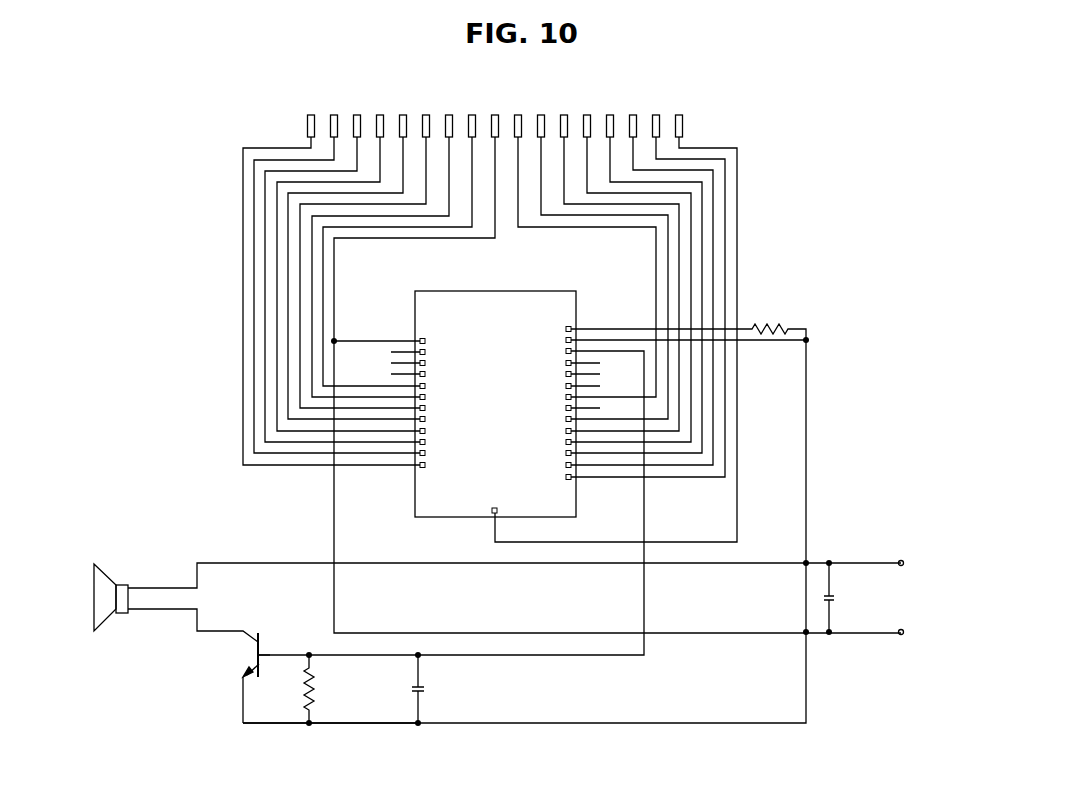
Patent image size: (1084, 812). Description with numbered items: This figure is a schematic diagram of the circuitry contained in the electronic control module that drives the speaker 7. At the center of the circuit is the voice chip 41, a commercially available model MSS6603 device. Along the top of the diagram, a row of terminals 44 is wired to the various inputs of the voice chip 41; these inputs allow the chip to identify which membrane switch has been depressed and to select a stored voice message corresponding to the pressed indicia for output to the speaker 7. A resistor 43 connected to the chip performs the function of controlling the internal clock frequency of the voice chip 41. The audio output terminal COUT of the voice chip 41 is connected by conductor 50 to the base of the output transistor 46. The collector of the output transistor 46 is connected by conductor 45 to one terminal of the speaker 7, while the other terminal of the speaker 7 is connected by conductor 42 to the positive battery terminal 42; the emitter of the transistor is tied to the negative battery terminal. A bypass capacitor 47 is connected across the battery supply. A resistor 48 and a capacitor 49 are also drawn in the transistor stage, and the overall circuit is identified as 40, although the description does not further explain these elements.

The speaker 7 is at (102, 618).
The sound generating circuit 40 is at (348, 728).
The voice chip 41 is at (522, 291).
The terminal 42 is at (866, 563).
The resistor 43 is at (764, 322).
The terminals 44 is at (692, 125).
The conductor 45 is at (217, 630).
The output transistor 46 is at (262, 640).
The capacitor 47 is at (823, 598).
The resistor R2 48 is at (302, 692).
The capacitor C2 49 is at (427, 695).
The conductor 50 is at (533, 656).